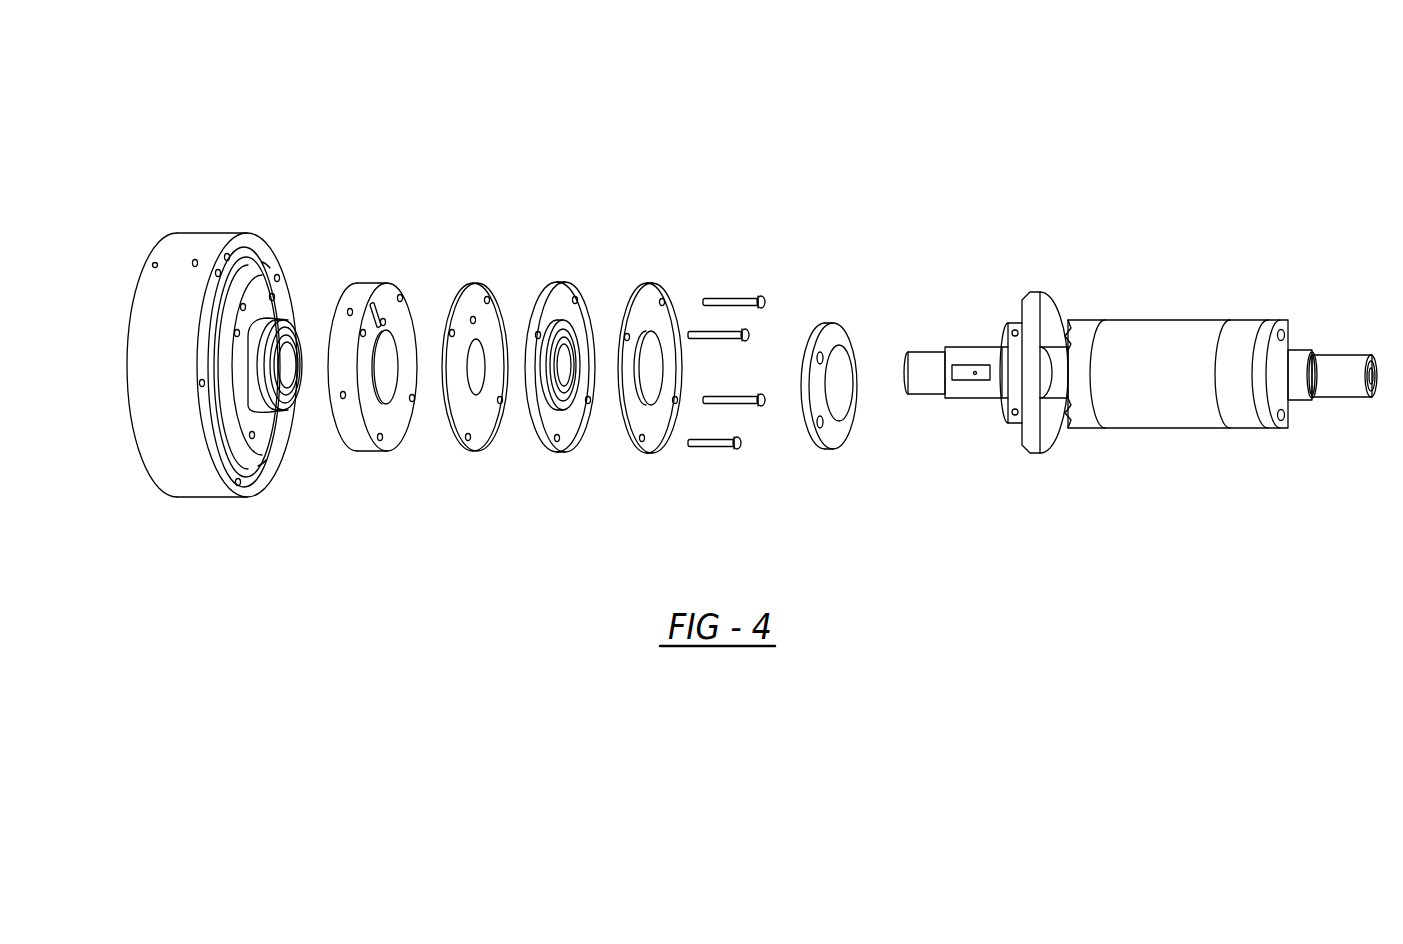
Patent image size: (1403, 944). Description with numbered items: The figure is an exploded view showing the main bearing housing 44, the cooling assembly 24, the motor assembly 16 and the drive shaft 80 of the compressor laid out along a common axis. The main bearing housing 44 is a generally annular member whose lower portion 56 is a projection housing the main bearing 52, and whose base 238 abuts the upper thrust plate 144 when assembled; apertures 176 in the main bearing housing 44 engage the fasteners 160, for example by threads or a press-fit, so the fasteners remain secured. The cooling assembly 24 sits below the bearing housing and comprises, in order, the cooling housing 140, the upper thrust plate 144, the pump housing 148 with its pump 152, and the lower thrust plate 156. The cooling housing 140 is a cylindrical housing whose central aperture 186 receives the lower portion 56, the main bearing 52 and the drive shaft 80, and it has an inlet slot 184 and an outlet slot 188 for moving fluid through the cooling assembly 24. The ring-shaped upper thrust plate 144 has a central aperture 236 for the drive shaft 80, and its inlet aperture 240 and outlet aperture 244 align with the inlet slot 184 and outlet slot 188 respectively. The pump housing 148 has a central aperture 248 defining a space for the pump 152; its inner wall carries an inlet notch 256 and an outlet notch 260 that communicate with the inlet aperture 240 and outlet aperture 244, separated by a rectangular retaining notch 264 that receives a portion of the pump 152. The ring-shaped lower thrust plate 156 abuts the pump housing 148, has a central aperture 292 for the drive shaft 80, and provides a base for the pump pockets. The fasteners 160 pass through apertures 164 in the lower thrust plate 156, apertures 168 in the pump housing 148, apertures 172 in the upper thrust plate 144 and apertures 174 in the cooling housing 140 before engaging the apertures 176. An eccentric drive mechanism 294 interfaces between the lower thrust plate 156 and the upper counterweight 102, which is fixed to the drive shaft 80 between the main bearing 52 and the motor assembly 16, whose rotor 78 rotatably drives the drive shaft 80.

The cooling assembly 24 is at (767, 90).
The main bearing housing 44 is at (198, 230).
The lower portion 56 is at (257, 386).
The apertures 176 is at (298, 340).
The main bearing 52 is at (297, 348).
The base 238 is at (290, 406).
The cooling housing 140 is at (356, 282).
The outlet slot 188 is at (377, 302).
The apertures 174 is at (401, 296).
The inlet slot 184 is at (381, 333).
The central aperture 186 is at (388, 406).
The inlet aperture 240 is at (446, 408).
The outlet aperture 244 is at (468, 300).
The apertures 172 is at (488, 296).
The central aperture 236 is at (498, 438).
The pump housing 148 is at (582, 443).
The upper thrust plate 144 is at (514, 438).
The apertures 168 is at (557, 442).
The inlet notch 256 is at (550, 322).
The retaining notch 264 is at (559, 330).
The outlet notch 260 is at (566, 348).
The central aperture 248 is at (574, 405).
The lower thrust plate 156 is at (663, 298).
The pump 152 is at (618, 296).
The central aperture 292 is at (656, 449).
The fasteners 160 is at (746, 297).
The apertures 164 is at (692, 298).
The eccentric drive mechanism 294 is at (856, 322).
The motor assembly 16 is at (1205, 294).
The upper counterweight 102 is at (1049, 291).
The rotor 78 is at (1136, 319).
The drive shaft 80 is at (1344, 367).